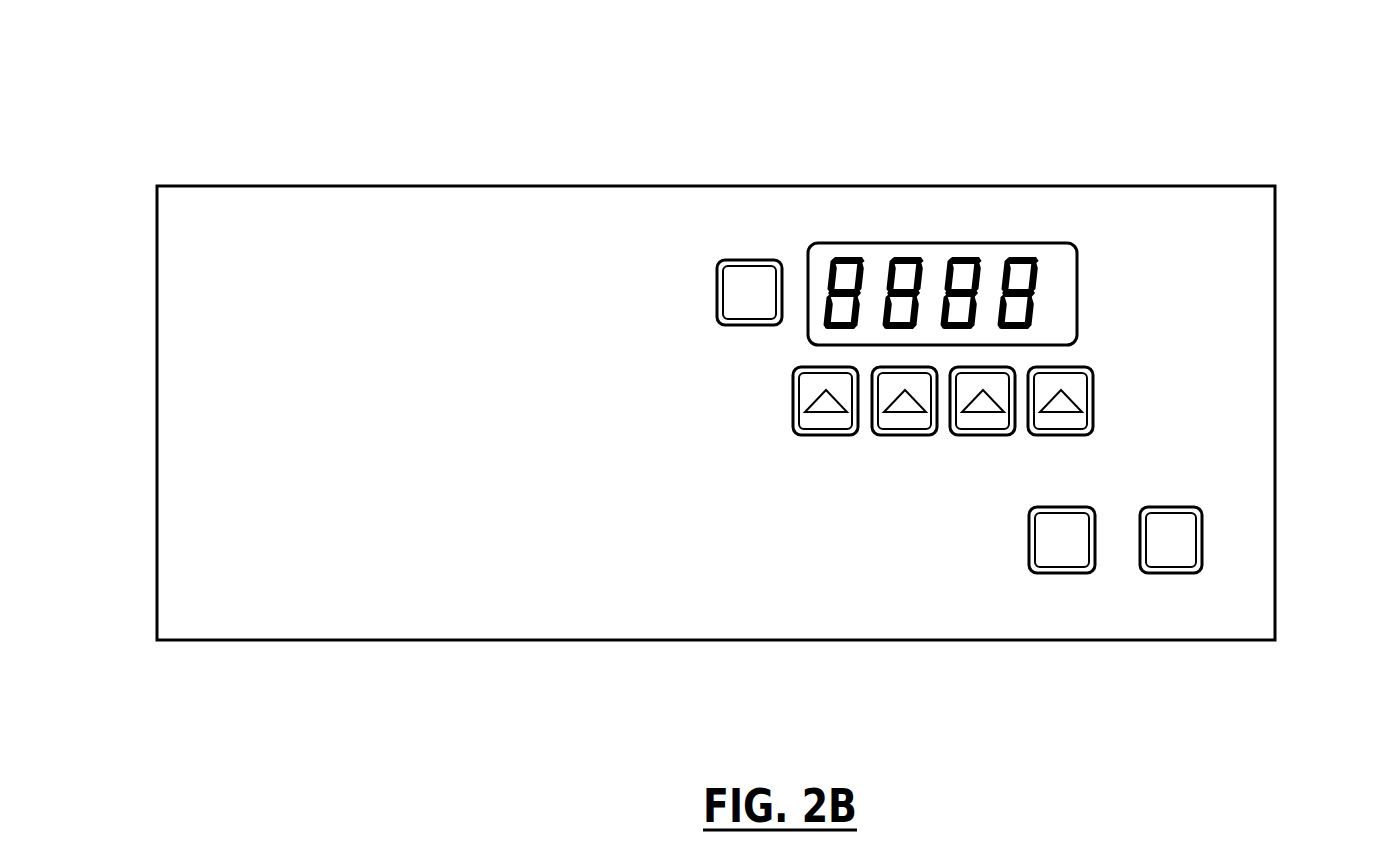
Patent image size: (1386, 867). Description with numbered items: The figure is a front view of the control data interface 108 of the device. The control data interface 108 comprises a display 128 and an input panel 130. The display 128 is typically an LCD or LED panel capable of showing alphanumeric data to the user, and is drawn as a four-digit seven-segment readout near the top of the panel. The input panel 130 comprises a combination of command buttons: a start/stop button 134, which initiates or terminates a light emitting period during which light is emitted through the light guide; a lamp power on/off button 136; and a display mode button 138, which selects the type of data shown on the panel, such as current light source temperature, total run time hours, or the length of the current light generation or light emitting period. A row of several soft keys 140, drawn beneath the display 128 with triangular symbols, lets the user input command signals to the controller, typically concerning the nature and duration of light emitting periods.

The control data interface 108 is at (994, 160).
The display 128 is at (1077, 298).
The input panel 130 is at (676, 374).
The start/stop button 134 is at (1080, 575).
The lamp power on/off button 136 is at (1187, 545).
The display mode button 138 is at (758, 282).
The soft keys 140 is at (1053, 435).